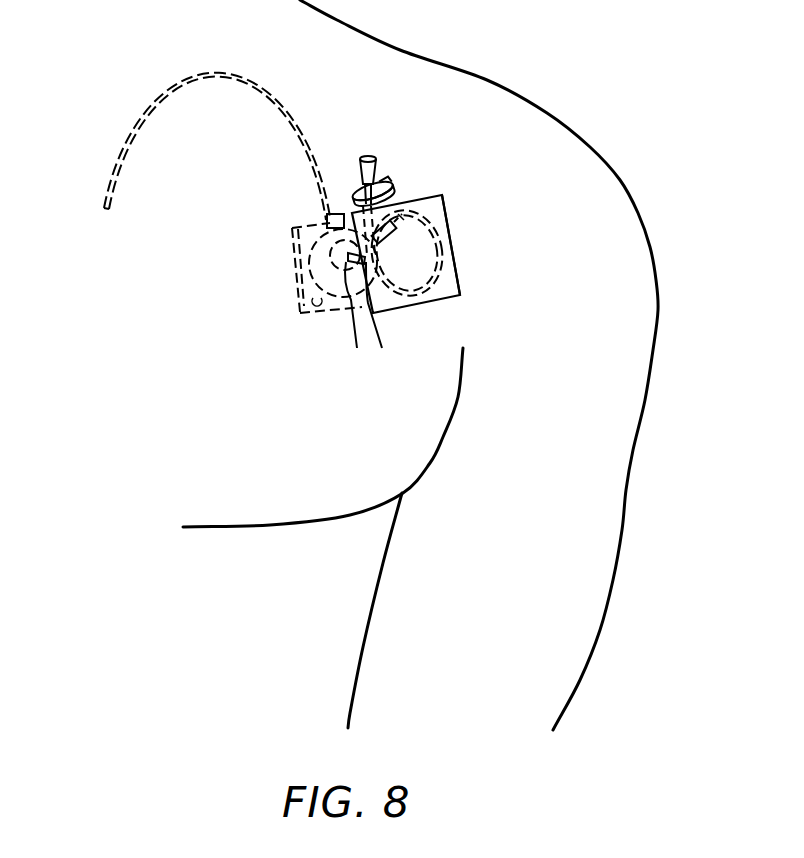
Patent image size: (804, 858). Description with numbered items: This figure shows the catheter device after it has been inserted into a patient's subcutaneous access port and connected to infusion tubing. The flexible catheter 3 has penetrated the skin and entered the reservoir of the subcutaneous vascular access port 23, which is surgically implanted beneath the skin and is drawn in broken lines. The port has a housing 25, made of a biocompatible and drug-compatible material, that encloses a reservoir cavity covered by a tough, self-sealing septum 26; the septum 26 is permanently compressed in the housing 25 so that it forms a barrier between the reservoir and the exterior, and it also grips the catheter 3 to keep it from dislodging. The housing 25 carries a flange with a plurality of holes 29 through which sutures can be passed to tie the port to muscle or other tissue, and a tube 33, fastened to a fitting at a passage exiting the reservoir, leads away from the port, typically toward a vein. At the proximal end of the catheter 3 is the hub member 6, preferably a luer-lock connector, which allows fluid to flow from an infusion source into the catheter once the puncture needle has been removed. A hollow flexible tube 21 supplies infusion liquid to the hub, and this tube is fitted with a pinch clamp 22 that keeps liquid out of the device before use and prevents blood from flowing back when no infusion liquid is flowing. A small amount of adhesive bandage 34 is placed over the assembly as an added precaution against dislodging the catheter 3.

The catheter 3 is at (373, 303).
The hub member 6 is at (367, 153).
The hollow flexible tube 21 is at (437, 287).
The pinch clamp 22 is at (390, 185).
The subcutaneous vascular access port 23 is at (293, 263).
The housing 25 is at (328, 273).
The septum 26 is at (360, 310).
The holes 29 is at (302, 238).
The tube 33 is at (258, 82).
The adhesive bandage 34 is at (447, 205).